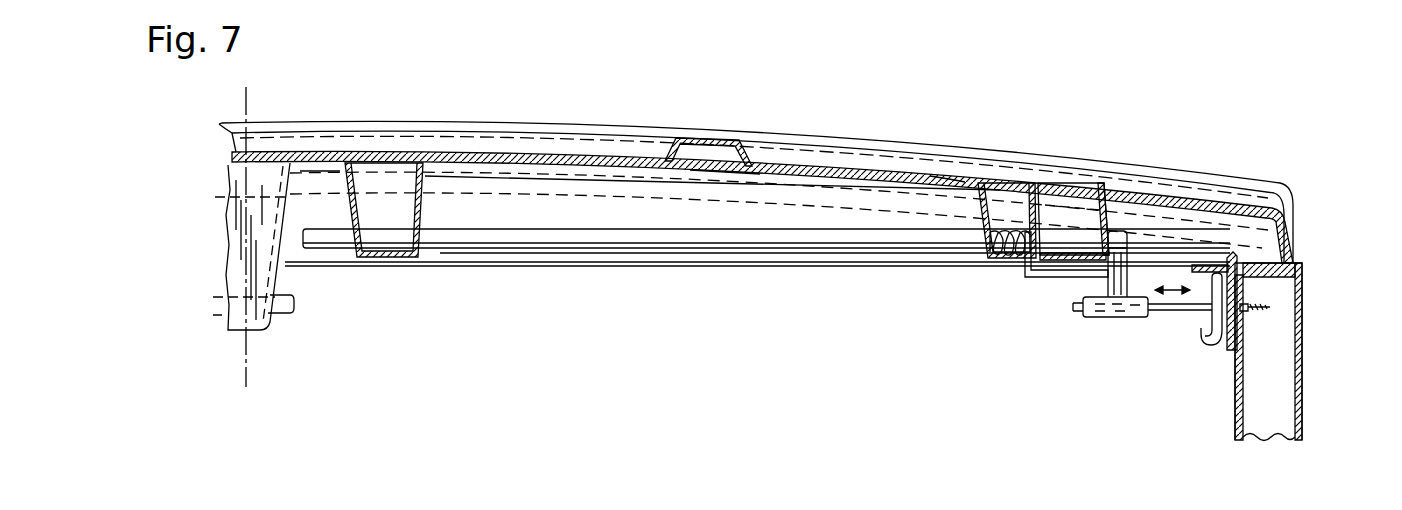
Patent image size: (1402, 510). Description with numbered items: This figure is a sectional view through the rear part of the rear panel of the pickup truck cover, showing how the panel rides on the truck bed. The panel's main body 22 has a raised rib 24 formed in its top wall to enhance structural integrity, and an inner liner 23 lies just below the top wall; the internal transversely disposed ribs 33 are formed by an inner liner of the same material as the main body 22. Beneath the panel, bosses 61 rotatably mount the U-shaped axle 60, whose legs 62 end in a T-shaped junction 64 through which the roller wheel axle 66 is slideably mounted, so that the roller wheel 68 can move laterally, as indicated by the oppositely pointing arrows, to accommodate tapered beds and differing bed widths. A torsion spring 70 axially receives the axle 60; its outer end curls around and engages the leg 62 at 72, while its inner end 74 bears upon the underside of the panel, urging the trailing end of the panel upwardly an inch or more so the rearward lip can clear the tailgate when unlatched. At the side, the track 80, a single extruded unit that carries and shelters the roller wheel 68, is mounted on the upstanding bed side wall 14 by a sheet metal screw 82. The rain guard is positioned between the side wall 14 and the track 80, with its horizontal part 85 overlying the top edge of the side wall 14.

The sidewall 14 is at (1304, 372).
The main body 22 is at (770, 163).
The inner liner 23 is at (757, 175).
The raised ribs 24 is at (680, 140).
The internal ribs 33 is at (610, 200).
The U-shaped axle 60 is at (805, 238).
The bosses 61 is at (427, 212).
The legs 62 is at (1108, 283).
The T-shaped junction 64 is at (1112, 312).
The axles 66 is at (1073, 307).
The roller wheels 68 is at (1200, 320).
The torsion springs 70 is at (1003, 255).
The outer end engagement 72 is at (1110, 212).
The inner end 74 is at (940, 180).
The track 80 is at (1215, 343).
The sheet metal screw 82 is at (1268, 306).
The horizontal part 85 is at (1245, 293).